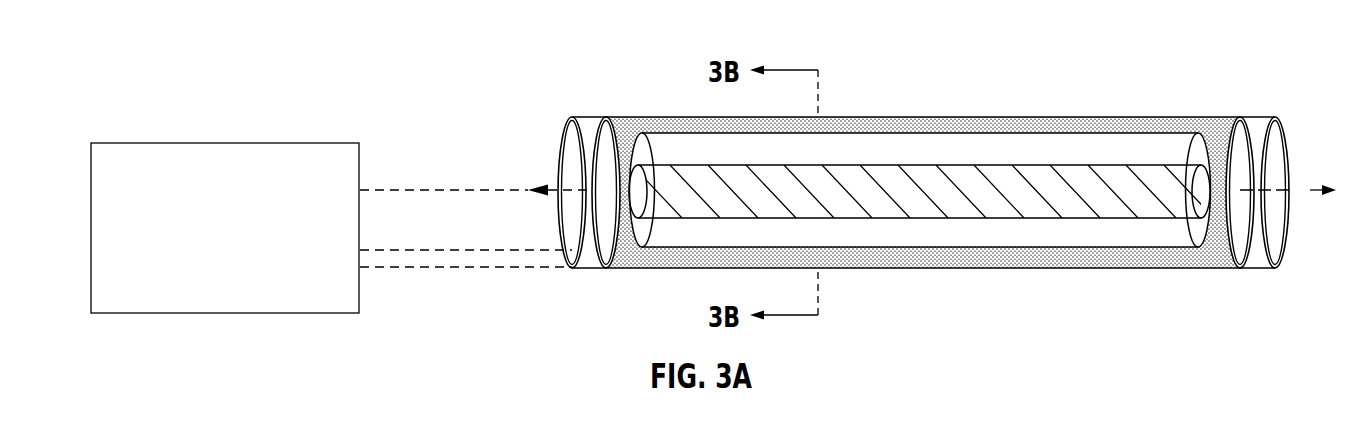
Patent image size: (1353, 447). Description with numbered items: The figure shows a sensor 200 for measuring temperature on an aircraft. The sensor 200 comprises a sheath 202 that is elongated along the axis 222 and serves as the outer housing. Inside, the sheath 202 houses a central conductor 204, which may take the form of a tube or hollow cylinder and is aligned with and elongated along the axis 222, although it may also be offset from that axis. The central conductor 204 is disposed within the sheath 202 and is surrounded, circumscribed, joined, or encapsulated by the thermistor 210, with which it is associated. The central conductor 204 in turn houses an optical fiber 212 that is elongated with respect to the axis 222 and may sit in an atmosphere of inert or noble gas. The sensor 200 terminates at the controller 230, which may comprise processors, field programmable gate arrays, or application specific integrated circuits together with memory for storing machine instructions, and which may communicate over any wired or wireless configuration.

The sensor 200 is at (1130, 66).
The sheath 202 is at (836, 116).
The central conductor 204 is at (679, 132).
The thermistor 210 is at (1181, 265).
The optical fiber 212 is at (949, 165).
The axis 222 is at (1298, 192).
The controller 230 is at (256, 187).